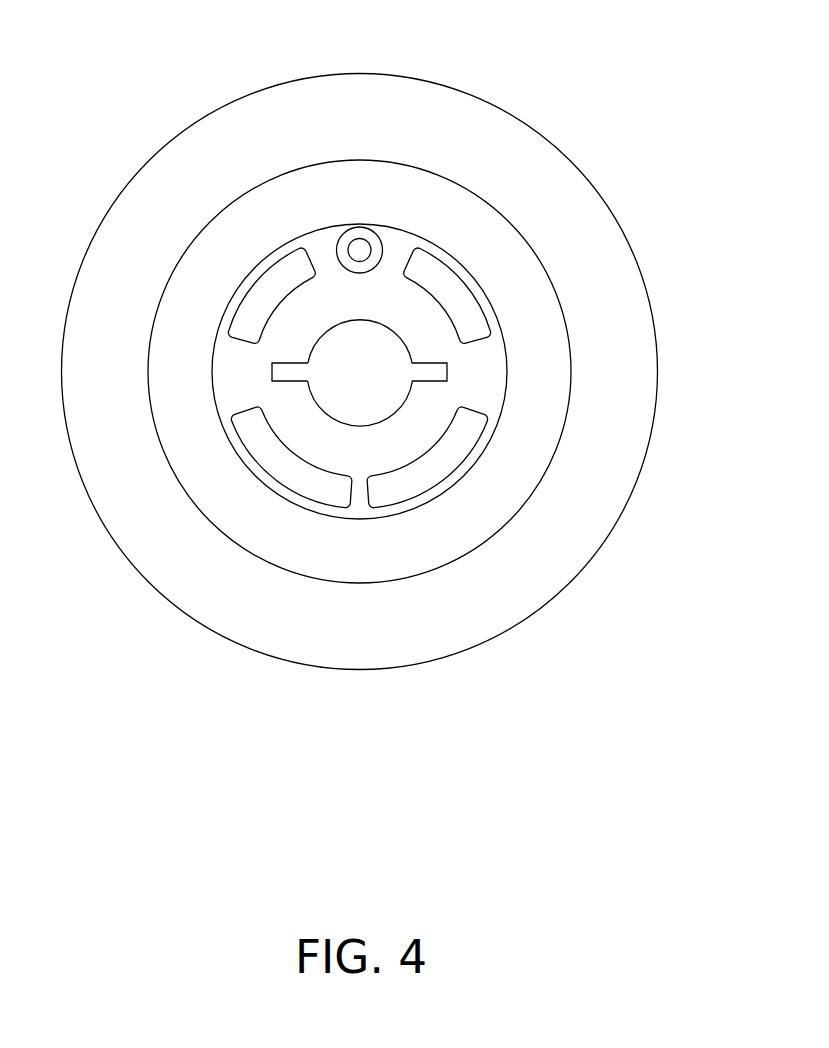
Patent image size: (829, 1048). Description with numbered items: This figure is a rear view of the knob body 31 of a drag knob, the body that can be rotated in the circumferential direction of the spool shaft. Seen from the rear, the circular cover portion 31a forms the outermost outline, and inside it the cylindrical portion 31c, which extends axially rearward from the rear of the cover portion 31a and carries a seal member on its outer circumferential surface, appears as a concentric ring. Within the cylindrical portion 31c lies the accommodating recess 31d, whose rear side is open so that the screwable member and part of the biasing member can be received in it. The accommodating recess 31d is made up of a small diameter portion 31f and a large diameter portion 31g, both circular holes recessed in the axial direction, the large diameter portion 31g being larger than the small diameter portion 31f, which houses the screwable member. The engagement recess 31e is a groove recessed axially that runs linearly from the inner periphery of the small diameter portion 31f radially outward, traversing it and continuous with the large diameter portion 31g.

The knob body 31 is at (412, 377).
The cover portion 31a is at (565, 178).
The cylindrical portion 31c is at (457, 231).
The accommodating recess 31d is at (500, 361).
The engagement recess 31e is at (291, 379).
The small diameter portion 31f is at (353, 426).
The large diameter portion 31g is at (507, 378).